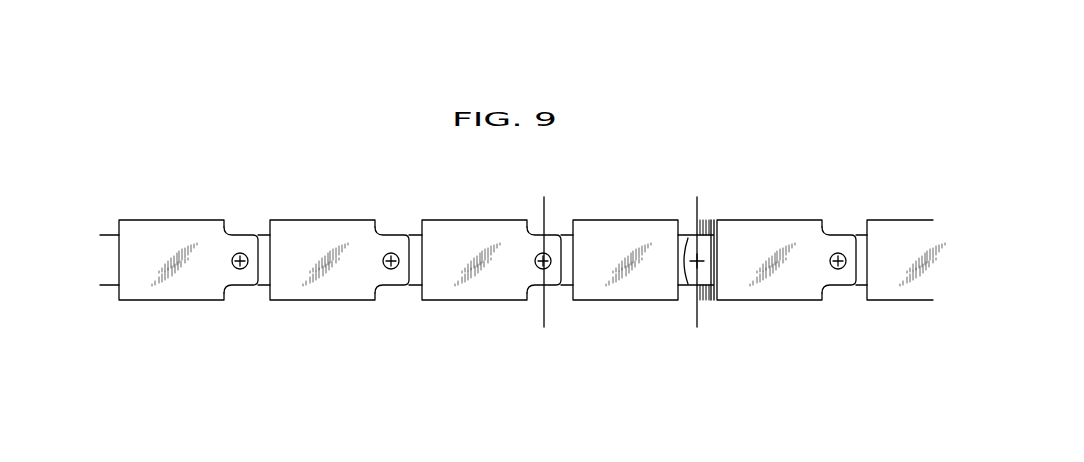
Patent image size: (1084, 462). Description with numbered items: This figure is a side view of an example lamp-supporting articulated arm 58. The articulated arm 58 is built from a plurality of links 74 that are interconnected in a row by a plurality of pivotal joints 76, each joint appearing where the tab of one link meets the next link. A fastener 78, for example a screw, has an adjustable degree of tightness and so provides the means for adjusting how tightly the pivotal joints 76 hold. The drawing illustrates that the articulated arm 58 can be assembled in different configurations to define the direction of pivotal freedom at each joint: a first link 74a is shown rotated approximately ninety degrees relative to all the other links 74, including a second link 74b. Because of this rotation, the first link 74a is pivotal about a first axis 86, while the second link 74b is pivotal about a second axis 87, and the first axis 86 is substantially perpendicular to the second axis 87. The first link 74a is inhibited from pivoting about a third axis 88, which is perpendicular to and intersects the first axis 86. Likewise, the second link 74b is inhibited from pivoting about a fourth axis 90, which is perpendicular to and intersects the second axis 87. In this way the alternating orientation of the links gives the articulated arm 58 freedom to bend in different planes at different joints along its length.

The articulated arm 58 is at (257, 183).
The links 74 is at (172, 300).
The first link 74a is at (640, 220).
The second link 74b is at (467, 220).
The pivotal joints 76 is at (397, 220).
The fastener 78 is at (234, 267).
The first axis 86 is at (697, 311).
The second axis 87 is at (550, 255).
The third axis 88 is at (701, 263).
The fourth axis 90 is at (545, 308).